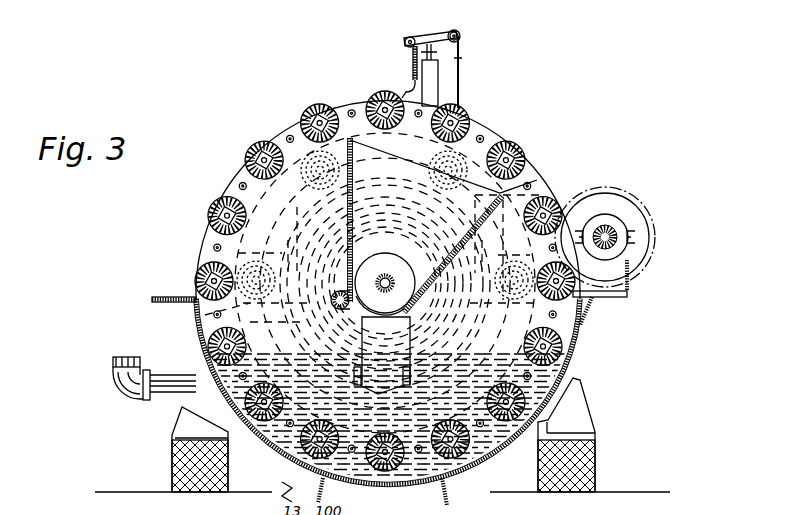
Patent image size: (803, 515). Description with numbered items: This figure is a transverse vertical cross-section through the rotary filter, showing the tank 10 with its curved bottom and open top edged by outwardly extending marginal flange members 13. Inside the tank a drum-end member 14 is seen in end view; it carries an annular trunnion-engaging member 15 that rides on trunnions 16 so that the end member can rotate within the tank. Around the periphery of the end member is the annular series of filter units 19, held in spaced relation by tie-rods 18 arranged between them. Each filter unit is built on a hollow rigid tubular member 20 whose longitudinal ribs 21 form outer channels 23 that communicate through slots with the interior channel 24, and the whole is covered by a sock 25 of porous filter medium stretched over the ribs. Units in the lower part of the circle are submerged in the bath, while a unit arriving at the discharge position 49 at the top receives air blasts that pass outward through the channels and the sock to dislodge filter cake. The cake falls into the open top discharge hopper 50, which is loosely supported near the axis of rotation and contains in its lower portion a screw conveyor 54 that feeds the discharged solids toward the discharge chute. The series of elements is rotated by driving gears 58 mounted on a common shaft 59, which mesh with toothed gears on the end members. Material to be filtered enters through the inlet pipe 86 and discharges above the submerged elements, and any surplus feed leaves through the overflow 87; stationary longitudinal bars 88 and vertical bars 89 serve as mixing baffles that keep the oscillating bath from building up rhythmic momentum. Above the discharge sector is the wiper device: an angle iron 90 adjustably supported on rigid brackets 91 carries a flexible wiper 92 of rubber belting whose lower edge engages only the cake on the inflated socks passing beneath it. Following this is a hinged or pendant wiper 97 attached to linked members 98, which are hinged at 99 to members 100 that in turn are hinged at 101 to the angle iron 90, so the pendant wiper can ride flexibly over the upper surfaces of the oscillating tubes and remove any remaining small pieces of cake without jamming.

The tank 10 is at (521, 153).
The marginal flange members 13 is at (152, 300).
The drum-end members 14 is at (210, 228).
The annular trunnion-engaging members 15 is at (210, 250).
The trunnions 16 is at (205, 315).
The tie-rods 18 is at (298, 142).
The filter units 19 is at (470, 128).
The tubular member 20 is at (335, 104).
The ribs 21 is at (318, 105).
The channels 23 is at (395, 104).
The channel 24 is at (383, 98).
The sock 25 is at (466, 116).
The discharge position 49 is at (490, 136).
The discharge hopper 50 is at (530, 180).
The screw conveyor 54 is at (392, 302).
The driving gears 58 is at (598, 195).
The common shaft 59 is at (612, 229).
The inlet pipe 86 is at (340, 305).
The overflow 87 is at (120, 378).
The stationary longitudinal bars 88 is at (378, 392).
The vertical bars 89 is at (404, 334).
The angle iron 90 is at (460, 43).
The rigid brackets 91 is at (432, 97).
The flexible wiper 92 is at (409, 86).
The hinged or pendant wiper 97 is at (437, 104).
The linked members 98 is at (461, 57).
The hinge 99 is at (458, 34).
The members 100 is at (423, 37).
The hinge 101 is at (404, 42).